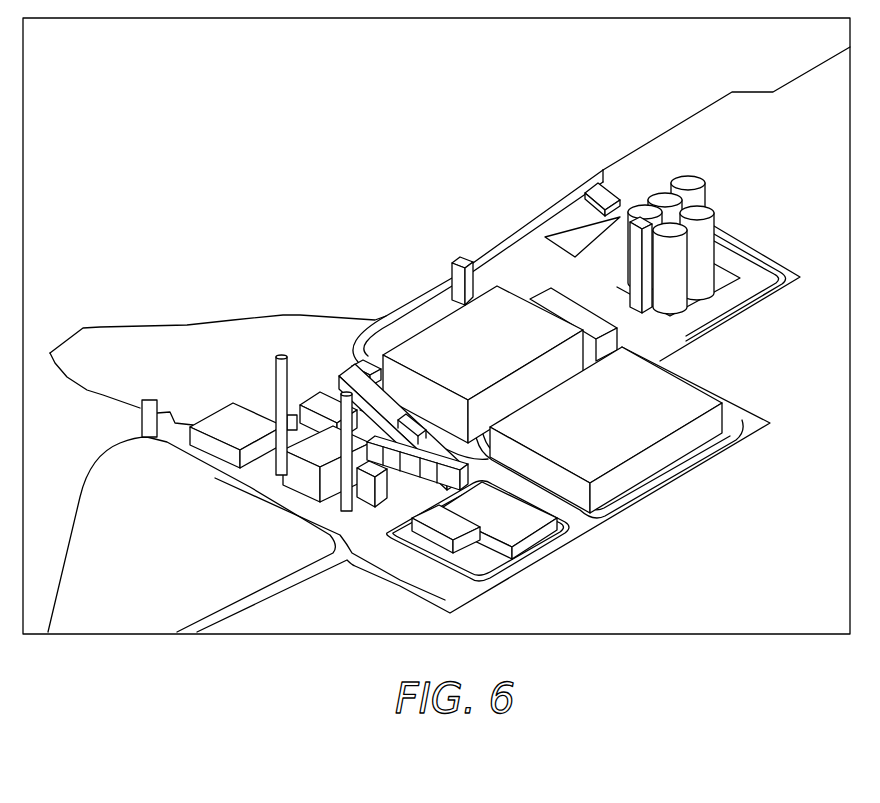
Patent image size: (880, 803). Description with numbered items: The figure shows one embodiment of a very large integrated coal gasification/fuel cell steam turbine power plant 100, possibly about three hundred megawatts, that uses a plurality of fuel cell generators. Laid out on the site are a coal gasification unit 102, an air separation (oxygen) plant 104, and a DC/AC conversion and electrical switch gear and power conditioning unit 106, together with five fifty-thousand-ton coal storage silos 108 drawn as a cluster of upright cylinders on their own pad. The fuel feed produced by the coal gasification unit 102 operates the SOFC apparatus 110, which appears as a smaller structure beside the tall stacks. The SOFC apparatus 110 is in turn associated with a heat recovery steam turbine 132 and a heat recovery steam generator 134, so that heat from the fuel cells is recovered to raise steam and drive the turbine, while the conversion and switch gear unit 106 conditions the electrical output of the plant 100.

The integrated coal gasification/fuel cell steam turbine power plant 100 is at (402, 196).
The coal gasification unit 102 is at (418, 352).
The air separation (oxygen) plant 104 is at (617, 455).
The DC/AC conversion and electrical switch gear and power conditioning unit 106 is at (522, 528).
The coal storage silos 108 is at (697, 212).
The SOFC apparatus 110 is at (323, 400).
The heat recovery steam turbine 132 is at (305, 484).
The heat recovery steam generator 134 is at (365, 492).